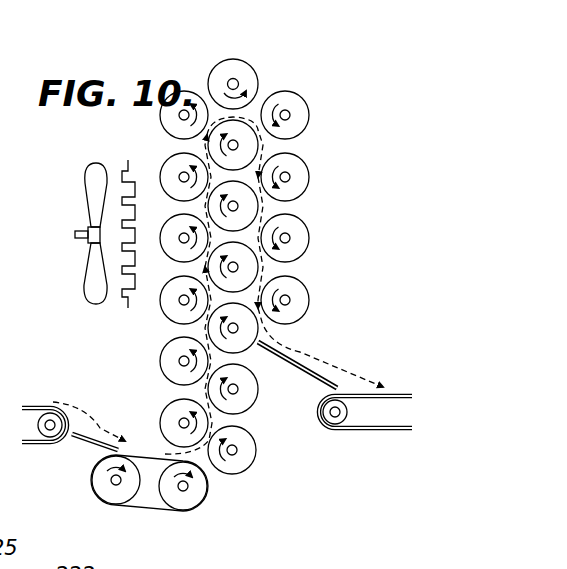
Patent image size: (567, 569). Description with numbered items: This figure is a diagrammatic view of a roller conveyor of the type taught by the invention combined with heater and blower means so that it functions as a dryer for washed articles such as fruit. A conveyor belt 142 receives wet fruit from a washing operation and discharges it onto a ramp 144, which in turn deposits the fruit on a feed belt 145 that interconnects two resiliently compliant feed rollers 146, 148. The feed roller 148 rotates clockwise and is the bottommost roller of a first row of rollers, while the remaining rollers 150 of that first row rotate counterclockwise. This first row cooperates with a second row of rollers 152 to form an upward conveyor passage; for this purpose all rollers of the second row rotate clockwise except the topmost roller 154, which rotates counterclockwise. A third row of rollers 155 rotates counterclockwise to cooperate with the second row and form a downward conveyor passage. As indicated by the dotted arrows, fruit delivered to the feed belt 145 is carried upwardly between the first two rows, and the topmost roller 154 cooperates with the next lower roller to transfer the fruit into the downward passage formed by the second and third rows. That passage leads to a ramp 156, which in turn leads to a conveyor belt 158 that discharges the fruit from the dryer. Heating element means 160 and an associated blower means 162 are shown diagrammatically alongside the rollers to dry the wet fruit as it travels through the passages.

The conveyor belt 142 is at (37, 405).
The ramp 144 is at (78, 446).
The feed belt 145 is at (140, 454).
The feed roller 146 is at (92, 483).
The feed roller 148 is at (182, 500).
The rollers of the first row 150 is at (159, 269).
The second row of rollers 152 is at (260, 433).
The topmost roller 154 is at (248, 72).
The third row of rollers 155 is at (296, 218).
The ramp 156 is at (309, 349).
The conveyor belt 158 is at (397, 394).
The heating element means 160 is at (128, 160).
The blower means 162 is at (91, 191).